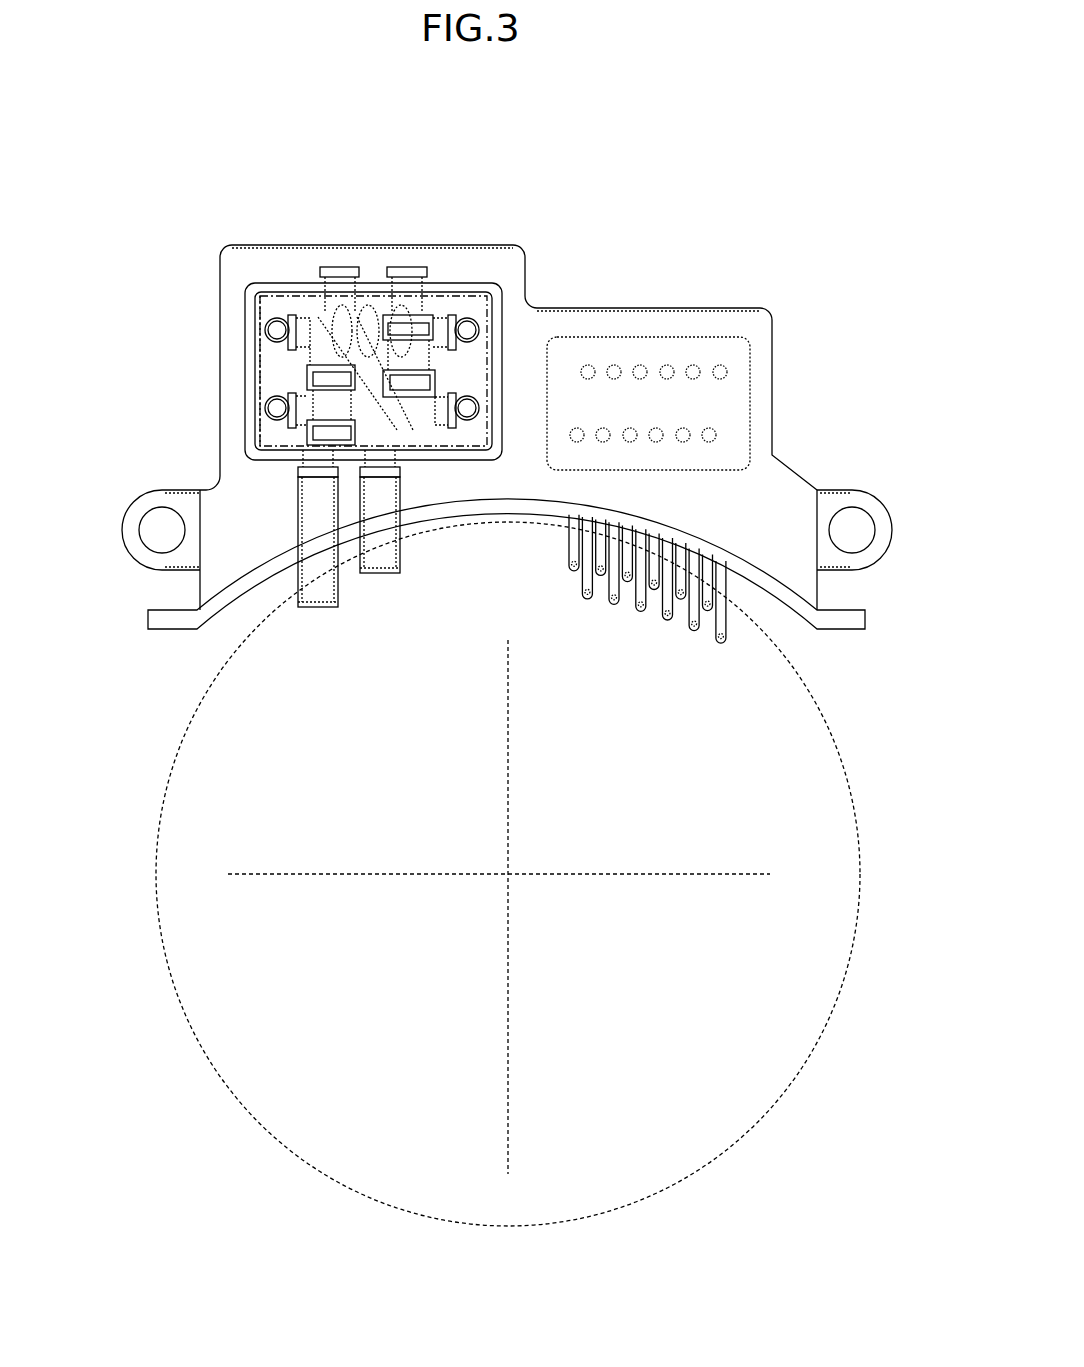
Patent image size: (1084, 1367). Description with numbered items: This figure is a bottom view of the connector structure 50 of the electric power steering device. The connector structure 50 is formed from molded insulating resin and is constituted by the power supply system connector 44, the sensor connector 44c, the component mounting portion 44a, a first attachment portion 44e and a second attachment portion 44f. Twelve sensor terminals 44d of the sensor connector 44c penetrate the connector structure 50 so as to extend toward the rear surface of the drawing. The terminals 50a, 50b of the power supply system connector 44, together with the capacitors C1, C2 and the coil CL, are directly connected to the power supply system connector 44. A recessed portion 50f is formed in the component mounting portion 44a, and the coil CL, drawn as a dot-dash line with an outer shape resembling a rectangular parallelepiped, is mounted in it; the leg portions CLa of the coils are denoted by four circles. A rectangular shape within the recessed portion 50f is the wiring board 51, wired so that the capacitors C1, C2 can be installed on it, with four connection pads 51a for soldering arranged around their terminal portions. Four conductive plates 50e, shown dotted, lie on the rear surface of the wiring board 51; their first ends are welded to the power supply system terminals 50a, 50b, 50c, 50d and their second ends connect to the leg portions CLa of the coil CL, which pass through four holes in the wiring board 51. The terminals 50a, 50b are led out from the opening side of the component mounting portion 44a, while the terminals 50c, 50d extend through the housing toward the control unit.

The power supply system connector 44 is at (499, 445).
The component mounting portion 44a is at (440, 320).
The sensor connector 44c is at (735, 410).
The sensor terminals 44d is at (730, 635).
The first attachment portion 44e is at (855, 503).
The second attachment portion 44f is at (170, 630).
The connector structure 50 is at (465, 429).
The power supply system terminal 50a is at (385, 267).
The power supply system terminal 50b is at (323, 267).
The power supply system terminal 50c is at (377, 573).
The power supply system terminal 50d is at (308, 610).
The conductive plates 50e is at (460, 320).
The recessed portion 50f is at (220, 345).
The wiring board 51 is at (247, 313).
The connection pads 51a is at (433, 323).
The coil CL is at (250, 340).
The leg portions CLa is at (255, 367).
The capacitor C1 is at (418, 386).
The capacitor C2 is at (303, 427).